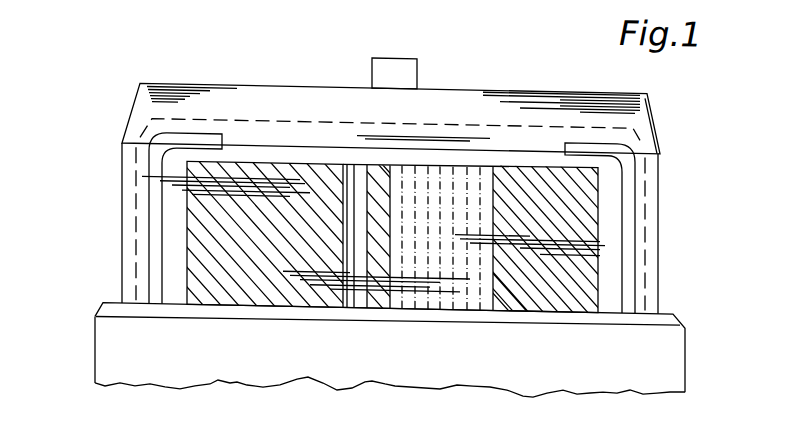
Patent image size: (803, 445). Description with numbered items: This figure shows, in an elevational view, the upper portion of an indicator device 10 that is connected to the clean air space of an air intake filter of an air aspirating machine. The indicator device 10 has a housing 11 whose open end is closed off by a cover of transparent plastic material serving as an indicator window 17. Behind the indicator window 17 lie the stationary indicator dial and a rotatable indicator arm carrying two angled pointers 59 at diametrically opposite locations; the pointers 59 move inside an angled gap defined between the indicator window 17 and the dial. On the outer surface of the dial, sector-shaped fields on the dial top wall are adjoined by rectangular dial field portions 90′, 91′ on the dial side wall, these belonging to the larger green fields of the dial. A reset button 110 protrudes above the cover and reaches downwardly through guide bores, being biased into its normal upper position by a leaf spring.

The indicator device 10 is at (122, 218).
The housing 11 is at (95, 350).
The indicator window 17 is at (638, 98).
The angled pointers 59 is at (155, 161).
The reset button 110 is at (392, 65).
The rectangular dial field portion 90′ is at (532, 304).
The rectangular dial field portion 91′ is at (268, 237).